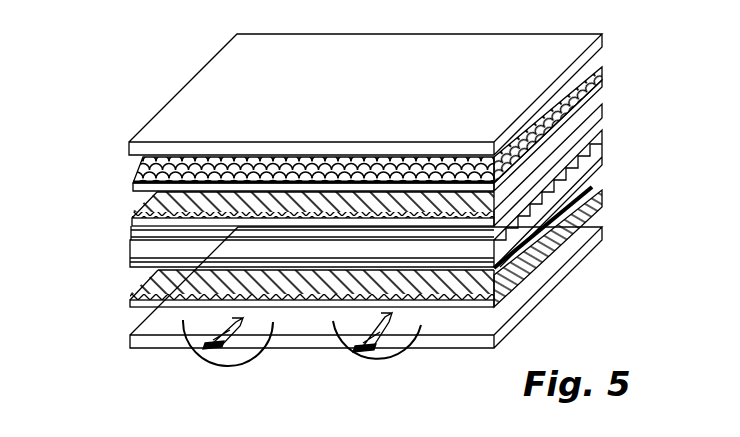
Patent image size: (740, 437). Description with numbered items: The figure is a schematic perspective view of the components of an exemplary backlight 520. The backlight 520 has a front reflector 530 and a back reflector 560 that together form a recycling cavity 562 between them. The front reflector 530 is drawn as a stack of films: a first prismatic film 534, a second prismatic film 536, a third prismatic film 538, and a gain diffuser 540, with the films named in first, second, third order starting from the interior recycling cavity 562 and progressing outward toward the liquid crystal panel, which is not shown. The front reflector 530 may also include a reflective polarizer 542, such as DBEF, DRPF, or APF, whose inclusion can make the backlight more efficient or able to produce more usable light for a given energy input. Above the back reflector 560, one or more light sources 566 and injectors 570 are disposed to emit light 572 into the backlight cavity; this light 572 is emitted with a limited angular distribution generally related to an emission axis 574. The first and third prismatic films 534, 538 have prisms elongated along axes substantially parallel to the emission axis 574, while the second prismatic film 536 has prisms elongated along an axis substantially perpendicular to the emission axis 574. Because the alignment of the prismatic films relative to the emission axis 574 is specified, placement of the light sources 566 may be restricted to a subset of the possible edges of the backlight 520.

The backlight 520 is at (151, 64).
The front reflector 530 is at (606, 62).
The reflective polarizer 542 is at (160, 128).
The gain diffuser 540 is at (147, 170).
The third prismatic film 538 is at (153, 204).
The second prismatic film 536 is at (150, 240).
The first prismatic film 534 is at (152, 282).
The back reflector 560 is at (155, 331).
The recycling cavity 562 is at (604, 219).
The light source 566 is at (190, 346).
The injector 570 is at (333, 356).
The light 572 is at (384, 350).
The emission axis 574 is at (393, 341).